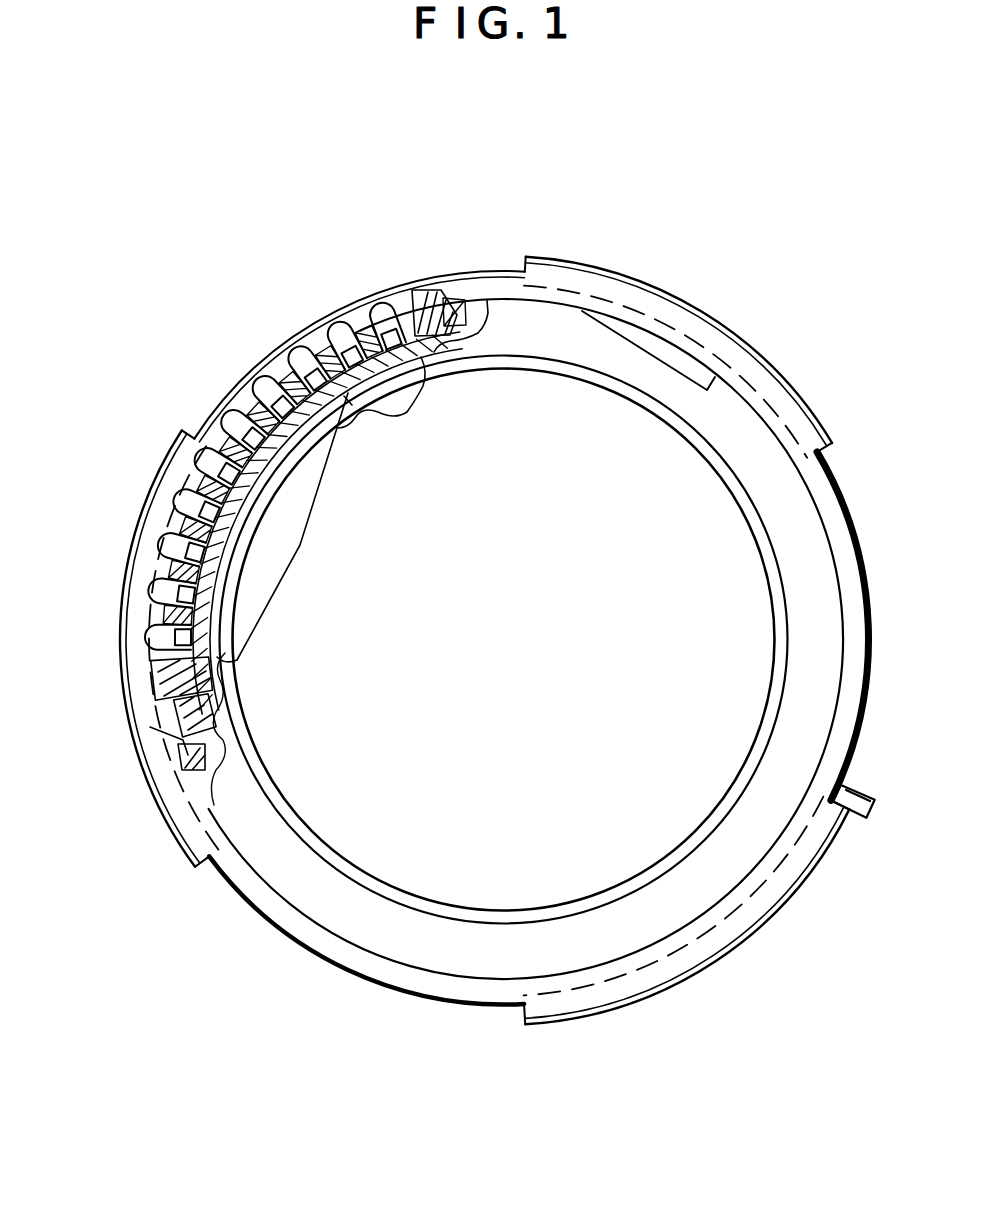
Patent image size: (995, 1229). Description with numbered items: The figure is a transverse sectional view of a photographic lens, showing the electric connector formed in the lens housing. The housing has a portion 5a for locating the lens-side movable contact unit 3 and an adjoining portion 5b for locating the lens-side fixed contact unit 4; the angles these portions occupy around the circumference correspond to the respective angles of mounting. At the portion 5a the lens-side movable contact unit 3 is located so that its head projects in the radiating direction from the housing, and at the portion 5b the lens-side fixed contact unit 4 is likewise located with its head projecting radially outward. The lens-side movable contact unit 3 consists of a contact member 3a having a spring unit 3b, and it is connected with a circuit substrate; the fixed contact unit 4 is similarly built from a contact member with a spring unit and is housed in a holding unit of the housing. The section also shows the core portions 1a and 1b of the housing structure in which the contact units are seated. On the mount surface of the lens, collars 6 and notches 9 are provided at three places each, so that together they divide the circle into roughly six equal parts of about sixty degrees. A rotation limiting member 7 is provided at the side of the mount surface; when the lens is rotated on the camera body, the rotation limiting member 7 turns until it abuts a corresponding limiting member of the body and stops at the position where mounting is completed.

The stator core tooth 1a is at (163, 658).
The stator core yoke 1b is at (150, 727).
The lens-side movable contact unit 3 is at (220, 413).
The contact member 3a is at (165, 545).
The spring unit 3b is at (185, 517).
The lens-side fixed contact unit 4 is at (384, 356).
The portion to locate the lens-side movable contact unit 5a is at (502, 640).
The portion to locate the lens-side fixed contact unit 5b is at (526, 638).
The collar 6 is at (763, 358).
The rotation limiting member 7 is at (862, 805).
The notch 9 is at (513, 262).